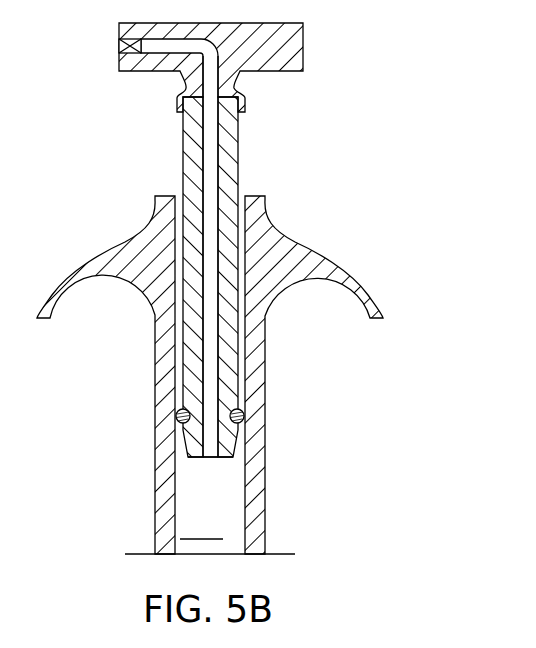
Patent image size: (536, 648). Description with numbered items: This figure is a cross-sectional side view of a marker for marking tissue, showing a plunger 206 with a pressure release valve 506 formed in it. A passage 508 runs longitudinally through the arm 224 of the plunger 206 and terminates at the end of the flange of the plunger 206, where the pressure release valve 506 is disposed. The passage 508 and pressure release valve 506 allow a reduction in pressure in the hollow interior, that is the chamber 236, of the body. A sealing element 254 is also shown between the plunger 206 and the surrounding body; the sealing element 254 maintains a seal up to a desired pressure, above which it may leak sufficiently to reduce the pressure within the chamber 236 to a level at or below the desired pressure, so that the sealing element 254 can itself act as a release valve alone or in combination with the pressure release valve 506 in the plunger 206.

The plunger 206 is at (272, 133).
The arm 224 is at (183, 158).
The passage 508 is at (224, 247).
The sealing element 254 is at (245, 414).
The pressure release valve 506 is at (96, 49).
The chamber 236 is at (201, 523).